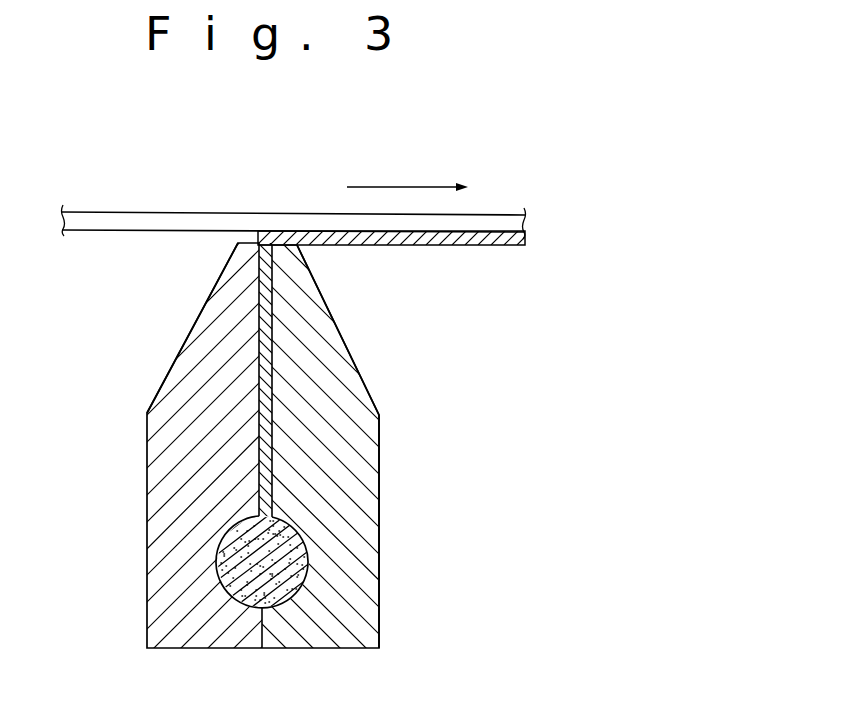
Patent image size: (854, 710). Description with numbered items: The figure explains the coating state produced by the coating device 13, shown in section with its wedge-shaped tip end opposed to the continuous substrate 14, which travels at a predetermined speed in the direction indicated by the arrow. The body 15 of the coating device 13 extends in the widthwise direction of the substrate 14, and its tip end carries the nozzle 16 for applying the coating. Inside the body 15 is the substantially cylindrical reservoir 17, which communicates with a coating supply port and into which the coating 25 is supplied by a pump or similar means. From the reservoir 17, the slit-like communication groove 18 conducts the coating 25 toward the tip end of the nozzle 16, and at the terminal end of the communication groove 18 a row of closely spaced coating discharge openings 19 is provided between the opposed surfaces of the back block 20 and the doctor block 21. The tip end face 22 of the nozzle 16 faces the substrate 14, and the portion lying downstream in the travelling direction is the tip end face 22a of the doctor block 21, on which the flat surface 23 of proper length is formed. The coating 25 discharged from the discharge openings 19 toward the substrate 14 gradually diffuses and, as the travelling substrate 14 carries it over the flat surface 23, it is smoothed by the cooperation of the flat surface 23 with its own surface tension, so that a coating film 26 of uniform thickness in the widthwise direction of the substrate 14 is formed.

The coating device 13 is at (407, 400).
The substrate 14 is at (165, 206).
The body 15 is at (386, 541).
The nozzle 16 is at (201, 303).
The reservoir 17 is at (310, 568).
The communication groove 18 is at (272, 416).
The coating discharge openings 19 is at (273, 283).
The back block 20 is at (167, 510).
The doctor block 21 is at (345, 491).
The tip end face of the nozzle 22 is at (251, 243).
The tip end face of the doctor block 22a is at (275, 243).
The flat surface 23 is at (292, 244).
The coating 25 is at (218, 564).
The coating film 26 is at (461, 248).